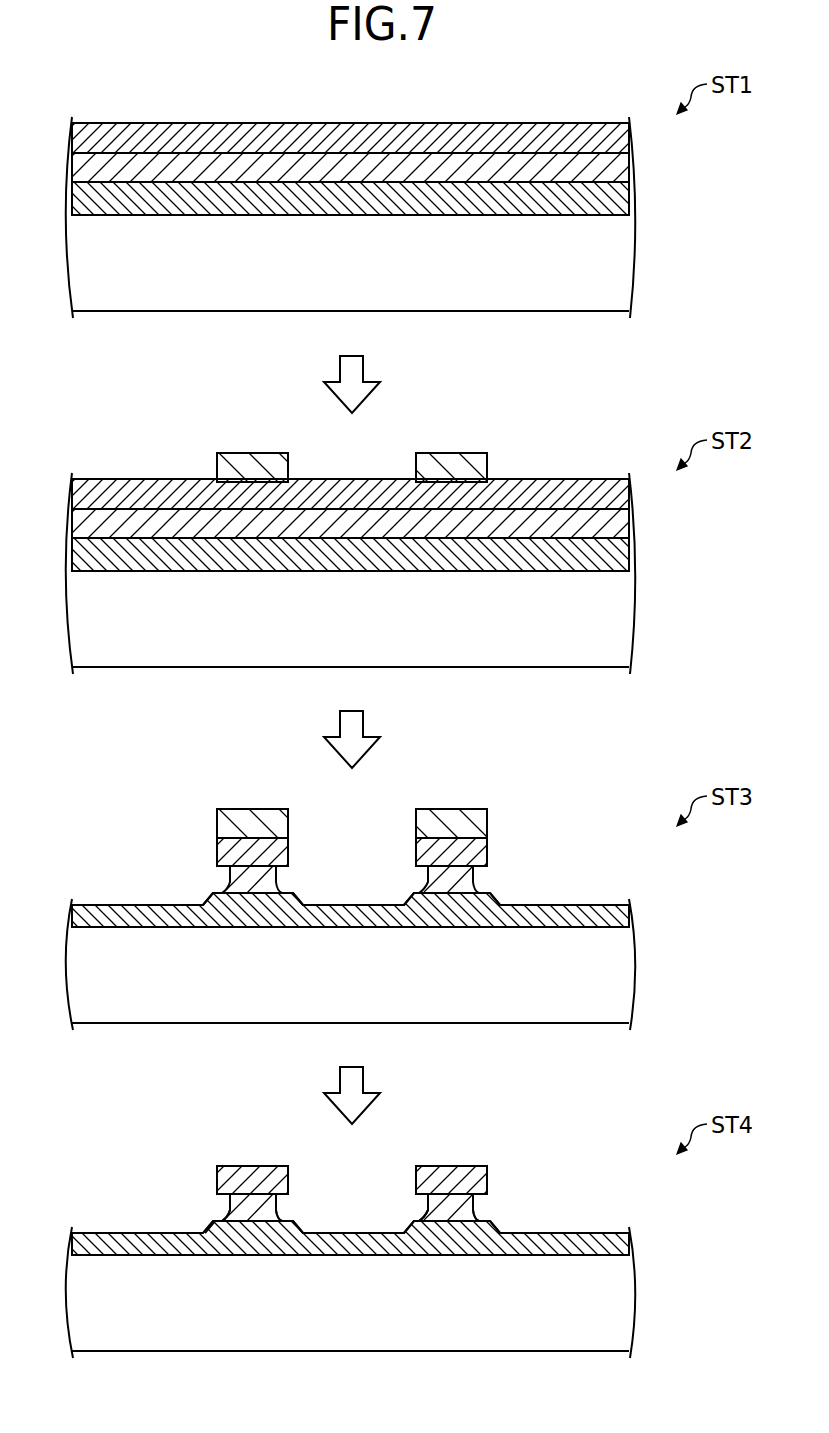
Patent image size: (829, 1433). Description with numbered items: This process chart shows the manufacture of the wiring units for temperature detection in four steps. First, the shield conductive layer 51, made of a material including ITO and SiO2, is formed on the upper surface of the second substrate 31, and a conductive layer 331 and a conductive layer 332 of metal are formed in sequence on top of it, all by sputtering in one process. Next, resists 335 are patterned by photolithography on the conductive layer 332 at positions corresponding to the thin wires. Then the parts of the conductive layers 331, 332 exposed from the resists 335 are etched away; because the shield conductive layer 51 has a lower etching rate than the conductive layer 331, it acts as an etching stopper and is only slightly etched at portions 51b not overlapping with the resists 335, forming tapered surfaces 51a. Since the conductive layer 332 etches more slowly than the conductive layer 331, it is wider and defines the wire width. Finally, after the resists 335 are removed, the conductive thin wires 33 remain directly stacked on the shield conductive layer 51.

The second substrate 31 is at (618, 263).
The shield conductive layer 51 is at (620, 198).
The tapered surfaces 51a is at (213, 895).
The portions not overlapping with the resists 51b is at (353, 905).
The conductive thin wires 33 is at (132, 1142).
The conductive layer 331 is at (618, 166).
The conductive layer 332 is at (622, 137).
The resists 335 is at (250, 453).